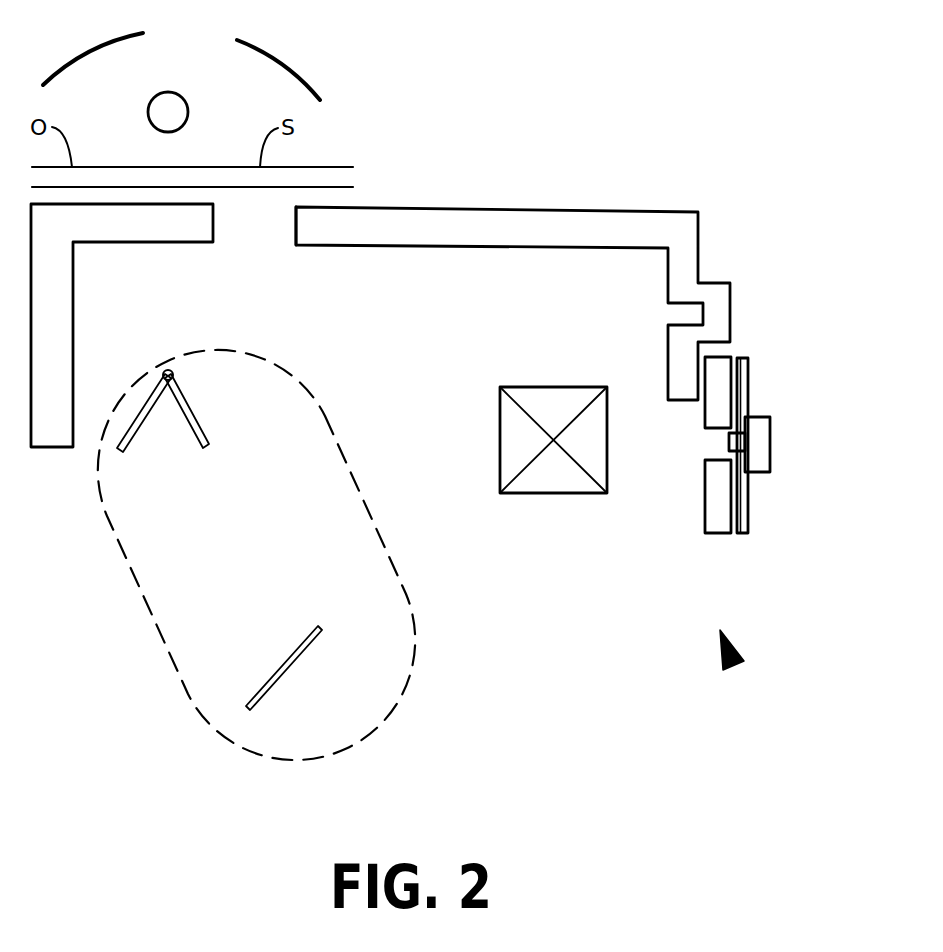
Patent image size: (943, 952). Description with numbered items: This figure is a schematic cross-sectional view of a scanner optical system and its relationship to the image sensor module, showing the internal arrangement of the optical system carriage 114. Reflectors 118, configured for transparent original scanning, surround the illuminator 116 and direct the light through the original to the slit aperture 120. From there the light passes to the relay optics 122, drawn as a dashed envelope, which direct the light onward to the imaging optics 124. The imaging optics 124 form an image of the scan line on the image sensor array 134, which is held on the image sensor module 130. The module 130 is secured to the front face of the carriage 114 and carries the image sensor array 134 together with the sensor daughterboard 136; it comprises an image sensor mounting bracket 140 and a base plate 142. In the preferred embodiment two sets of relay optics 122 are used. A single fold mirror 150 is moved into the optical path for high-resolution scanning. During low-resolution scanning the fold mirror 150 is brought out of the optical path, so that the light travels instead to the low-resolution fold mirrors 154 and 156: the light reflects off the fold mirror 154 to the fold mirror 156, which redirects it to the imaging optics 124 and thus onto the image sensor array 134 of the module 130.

The carriage 114 is at (652, 207).
The illuminator 116 is at (189, 102).
The reflectors 118 is at (287, 66).
The slit aperture 120 is at (295, 228).
The relay optics 122 is at (168, 666).
The imaging optics 124 is at (550, 495).
The image sensor module 130 is at (727, 667).
The image sensor array 134 is at (711, 428).
The sensor daughterboard 136 is at (743, 533).
The image sensor mounting bracket 140 is at (773, 447).
The base plate 142 is at (730, 381).
The fold mirror 150 is at (193, 441).
The low-resolution fold mirror 154 is at (283, 672).
The low-resolution fold mirror 156 is at (122, 448).